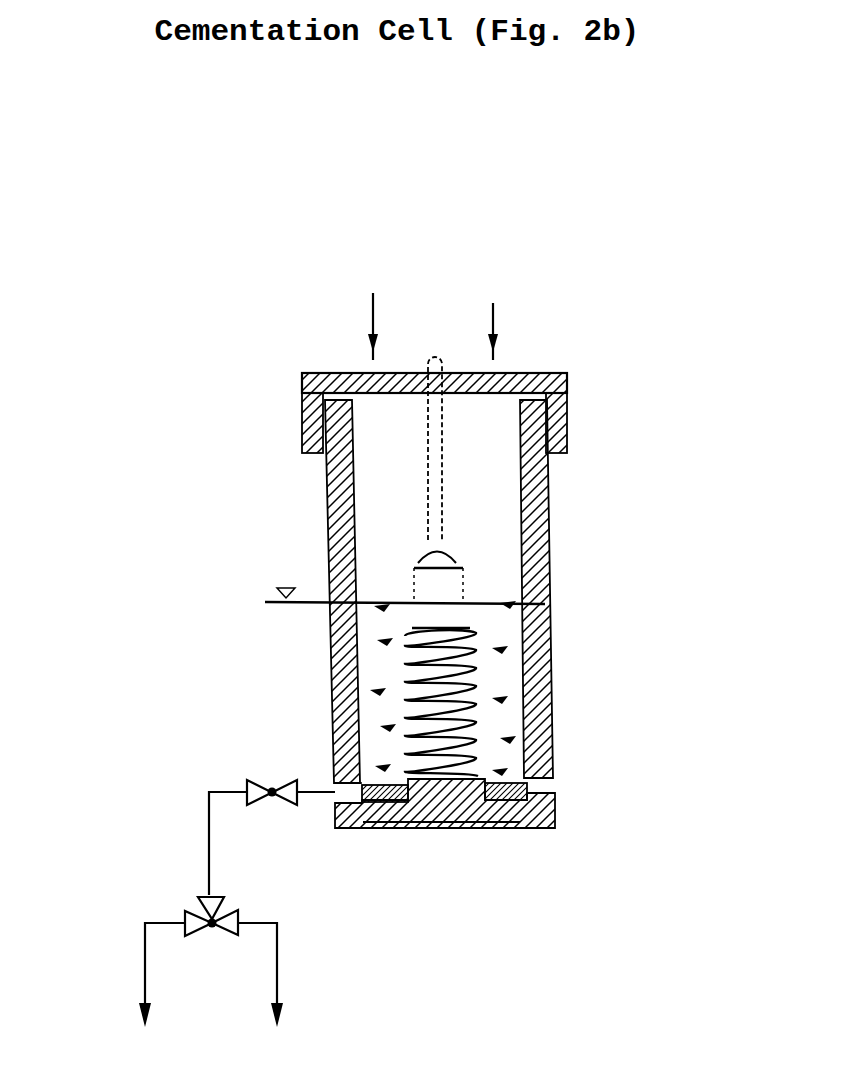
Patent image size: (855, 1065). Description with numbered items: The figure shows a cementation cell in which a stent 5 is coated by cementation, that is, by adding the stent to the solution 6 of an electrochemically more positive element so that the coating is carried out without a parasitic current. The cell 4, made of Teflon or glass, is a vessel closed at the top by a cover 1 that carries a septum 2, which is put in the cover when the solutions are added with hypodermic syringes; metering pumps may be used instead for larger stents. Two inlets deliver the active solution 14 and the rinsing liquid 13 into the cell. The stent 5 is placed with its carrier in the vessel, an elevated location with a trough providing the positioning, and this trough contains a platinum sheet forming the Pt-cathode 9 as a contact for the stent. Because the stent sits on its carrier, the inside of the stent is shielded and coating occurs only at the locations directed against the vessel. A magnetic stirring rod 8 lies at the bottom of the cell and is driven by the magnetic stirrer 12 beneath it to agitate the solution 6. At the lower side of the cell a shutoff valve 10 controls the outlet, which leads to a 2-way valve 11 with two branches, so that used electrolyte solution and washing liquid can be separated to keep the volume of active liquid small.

The cover 1 is at (565, 385).
The septum 2 is at (549, 406).
The cell 4 is at (545, 604).
The stent 5 is at (470, 658).
The solution 6 is at (495, 713).
The magnetic stirring rod 8 is at (533, 796).
The Pt-cathode 9 is at (548, 823).
The shutoff valve 10 is at (262, 799).
The 2-way valve 11 is at (188, 915).
The magnetic stirrer 12 is at (447, 836).
The rinsing liquid 13 is at (493, 320).
The active solution 14 is at (373, 302).